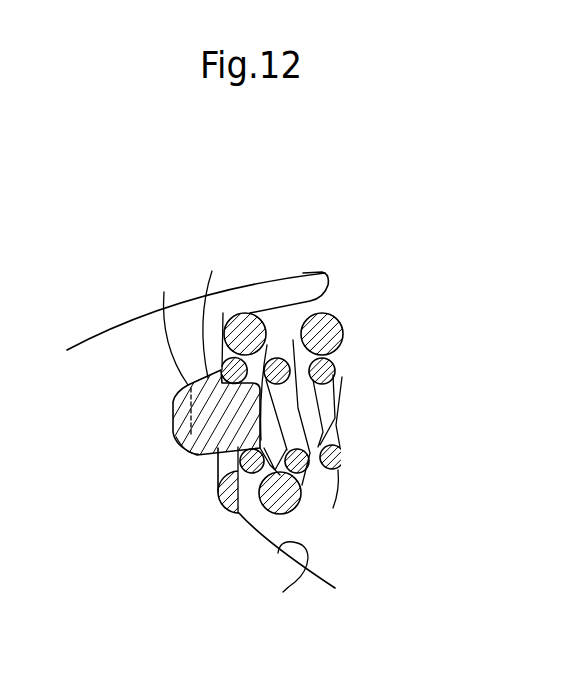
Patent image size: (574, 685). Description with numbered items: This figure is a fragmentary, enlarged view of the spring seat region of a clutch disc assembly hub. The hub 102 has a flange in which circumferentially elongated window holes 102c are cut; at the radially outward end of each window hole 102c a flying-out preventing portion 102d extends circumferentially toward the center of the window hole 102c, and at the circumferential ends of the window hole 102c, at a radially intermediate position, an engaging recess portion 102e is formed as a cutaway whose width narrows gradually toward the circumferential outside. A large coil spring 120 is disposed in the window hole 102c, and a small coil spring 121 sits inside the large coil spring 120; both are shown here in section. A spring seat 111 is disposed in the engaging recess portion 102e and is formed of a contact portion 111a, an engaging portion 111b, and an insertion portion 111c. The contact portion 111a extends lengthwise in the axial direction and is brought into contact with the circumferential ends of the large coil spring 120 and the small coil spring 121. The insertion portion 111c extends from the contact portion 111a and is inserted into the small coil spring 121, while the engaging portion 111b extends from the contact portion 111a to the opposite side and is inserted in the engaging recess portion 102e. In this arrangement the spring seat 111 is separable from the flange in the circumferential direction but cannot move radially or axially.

The hub 102 is at (123, 377).
The window hole 102c is at (282, 586).
The flying-out preventing portion 102d is at (285, 287).
The engaging recess portion 102e is at (200, 453).
The spring seat 111 is at (142, 362).
The contact portion 111a is at (225, 341).
The engaging portion 111b is at (155, 325).
The insertion portion 111c is at (243, 427).
The large coil spring 120 is at (338, 328).
The small coil spring 121 is at (335, 369).